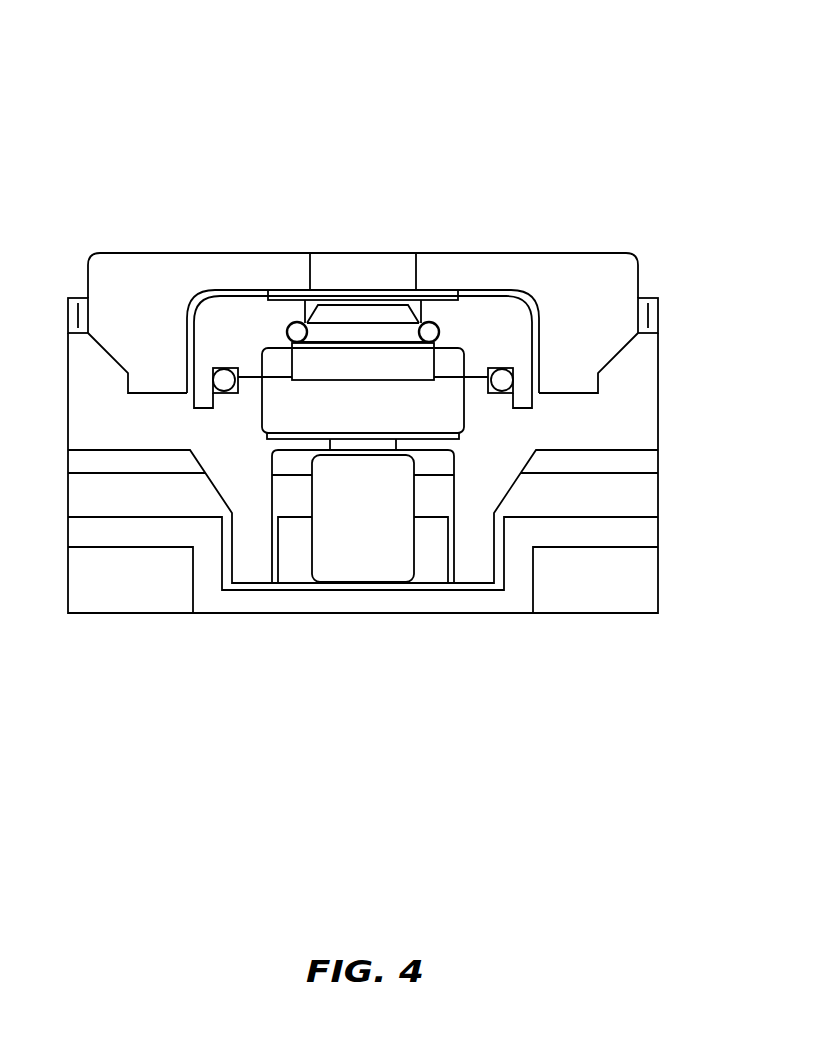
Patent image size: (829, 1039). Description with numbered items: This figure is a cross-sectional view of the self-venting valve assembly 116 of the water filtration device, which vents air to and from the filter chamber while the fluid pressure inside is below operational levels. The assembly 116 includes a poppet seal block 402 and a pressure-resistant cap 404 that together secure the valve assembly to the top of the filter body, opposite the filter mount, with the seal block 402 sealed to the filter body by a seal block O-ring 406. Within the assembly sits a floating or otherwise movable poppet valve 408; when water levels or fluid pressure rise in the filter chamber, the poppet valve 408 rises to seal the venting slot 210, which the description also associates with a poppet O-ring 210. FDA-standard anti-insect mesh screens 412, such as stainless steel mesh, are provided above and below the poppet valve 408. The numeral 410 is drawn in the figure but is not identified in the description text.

The self-venting valve assembly 116 is at (77, 73).
The poppet seal block 402 is at (167, 283).
The pressure-resistant cap 404 is at (485, 312).
The seal block O-ring 406 is at (502, 388).
The poppet valve 408 is at (362, 362).
The shaft rollers 410 is at (307, 330).
The anti-insect mesh screens 412 is at (292, 295).
The venting slot 210 is at (388, 273).